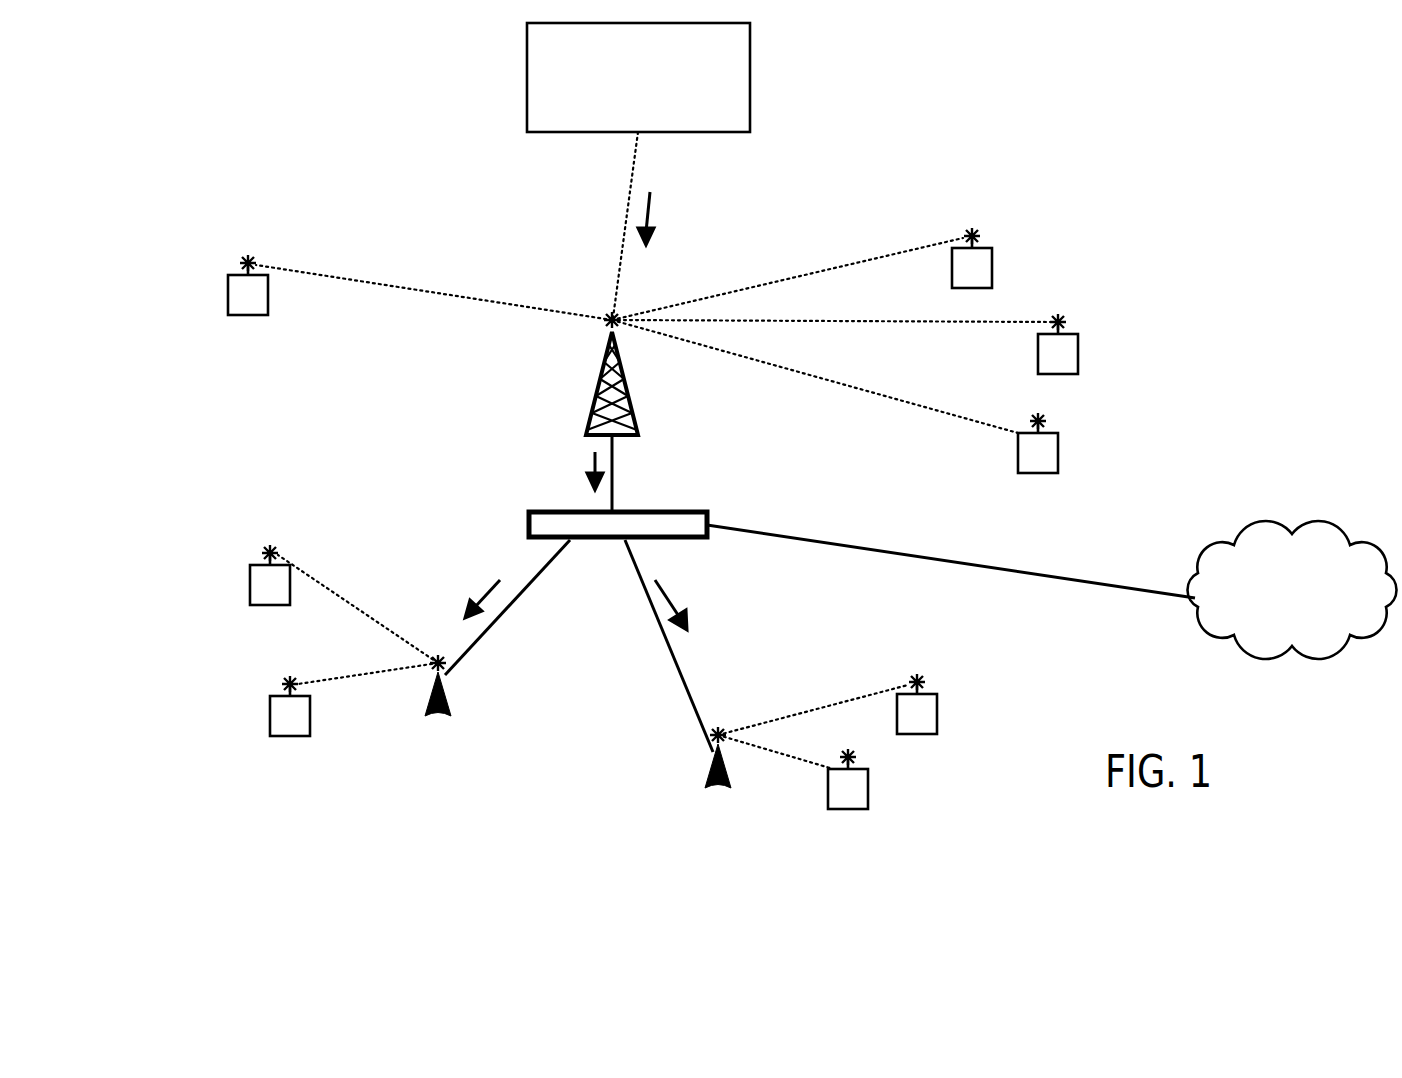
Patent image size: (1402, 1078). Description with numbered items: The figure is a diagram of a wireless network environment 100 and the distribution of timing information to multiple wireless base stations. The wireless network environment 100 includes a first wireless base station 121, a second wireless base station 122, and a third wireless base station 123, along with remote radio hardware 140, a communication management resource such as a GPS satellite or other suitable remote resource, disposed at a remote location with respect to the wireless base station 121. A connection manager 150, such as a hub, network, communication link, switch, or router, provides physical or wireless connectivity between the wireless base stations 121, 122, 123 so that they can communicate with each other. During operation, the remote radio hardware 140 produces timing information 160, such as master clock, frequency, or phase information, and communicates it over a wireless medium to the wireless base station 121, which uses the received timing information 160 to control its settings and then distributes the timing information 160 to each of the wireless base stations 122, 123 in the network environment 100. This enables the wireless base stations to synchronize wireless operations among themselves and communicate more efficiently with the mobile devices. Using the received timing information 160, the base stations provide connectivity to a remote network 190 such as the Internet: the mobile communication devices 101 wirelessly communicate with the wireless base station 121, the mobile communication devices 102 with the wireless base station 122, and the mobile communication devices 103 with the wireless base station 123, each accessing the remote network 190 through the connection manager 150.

The wireless network environment 100 is at (247, 119).
The mobile communication devices 101 is at (195, 312).
The mobile communication devices 102 is at (266, 714).
The mobile communication devices 103 is at (965, 706).
The first wireless base station 121 is at (590, 403).
The second wireless base station 122 is at (422, 707).
The third wireless base station 123 is at (703, 782).
The remote radio hardware 140 is at (638, 77).
The connection manager 150 is at (670, 508).
The timing information 160 is at (692, 203).
The remote network 190 is at (1291, 590).